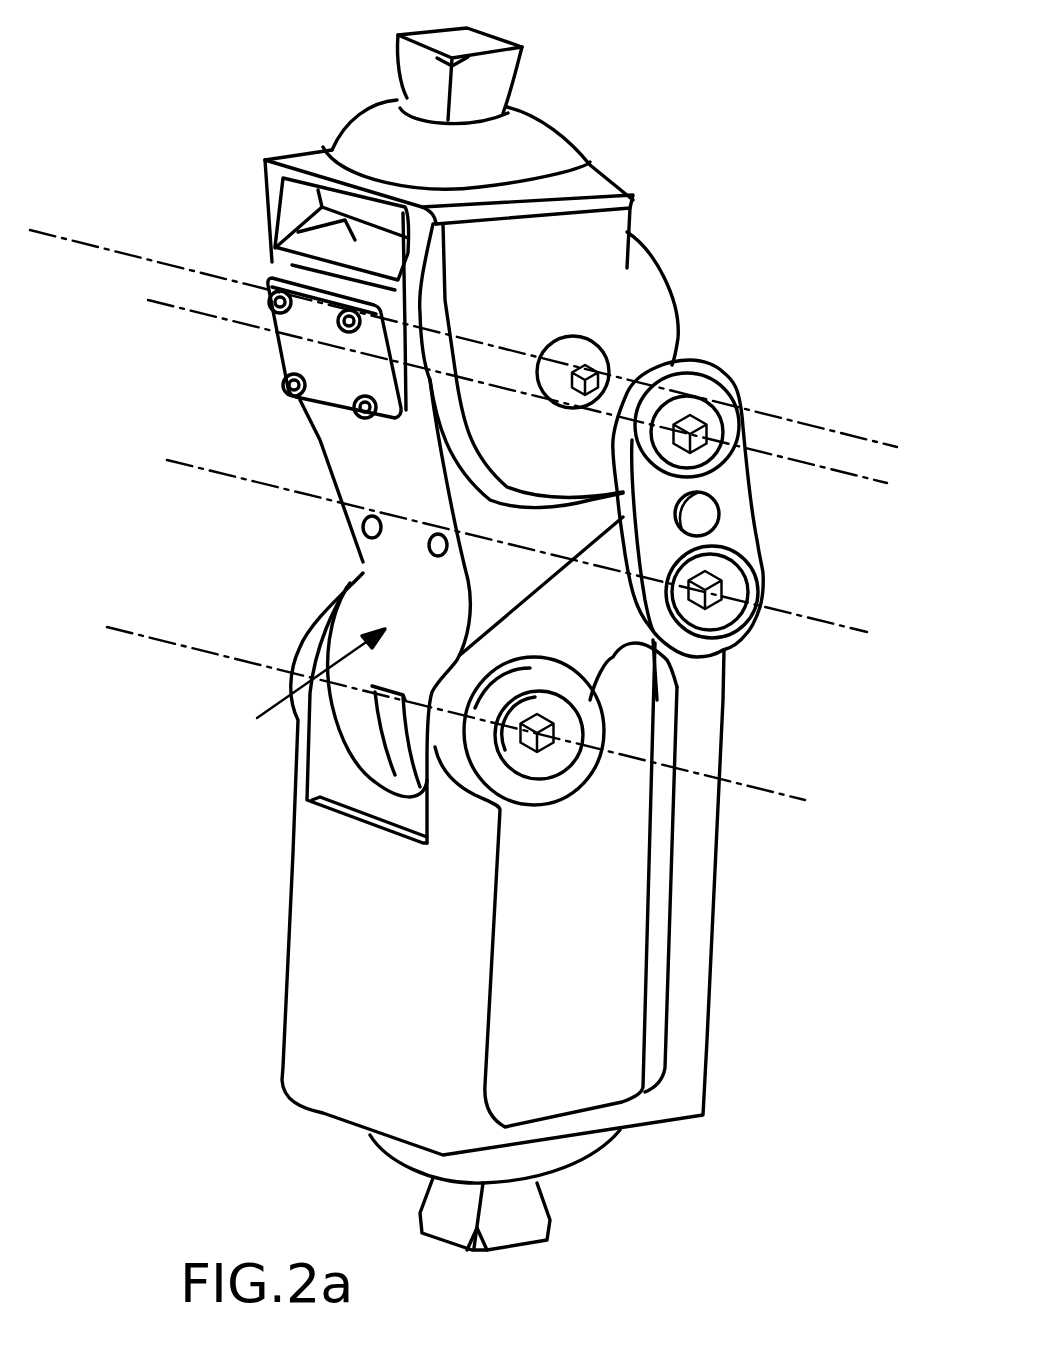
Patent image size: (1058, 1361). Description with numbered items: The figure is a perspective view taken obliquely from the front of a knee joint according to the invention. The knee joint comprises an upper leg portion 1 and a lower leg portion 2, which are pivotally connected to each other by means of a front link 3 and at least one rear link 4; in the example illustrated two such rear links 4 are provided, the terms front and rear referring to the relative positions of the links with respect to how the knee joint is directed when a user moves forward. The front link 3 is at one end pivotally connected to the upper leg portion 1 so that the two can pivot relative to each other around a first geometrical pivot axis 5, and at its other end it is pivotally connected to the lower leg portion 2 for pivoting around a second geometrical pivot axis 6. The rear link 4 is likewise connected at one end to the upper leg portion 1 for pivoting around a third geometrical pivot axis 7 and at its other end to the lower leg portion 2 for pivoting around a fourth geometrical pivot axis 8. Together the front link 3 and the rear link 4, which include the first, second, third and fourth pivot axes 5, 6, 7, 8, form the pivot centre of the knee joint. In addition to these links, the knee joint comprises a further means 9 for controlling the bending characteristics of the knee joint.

The upper leg portion 1 is at (523, 133).
The lower leg portion 2 is at (317, 1018).
The front link 3 is at (387, 571).
The rear link 4 is at (735, 532).
The first geometrical pivot axis 5 is at (48, 230).
The second geometrical pivot axis 6 is at (145, 640).
The third geometrical pivot axis 7 is at (178, 308).
The fourth geometrical pivot axis 8 is at (192, 464).
The further means for controlling the bending characteristics 9 is at (309, 690).